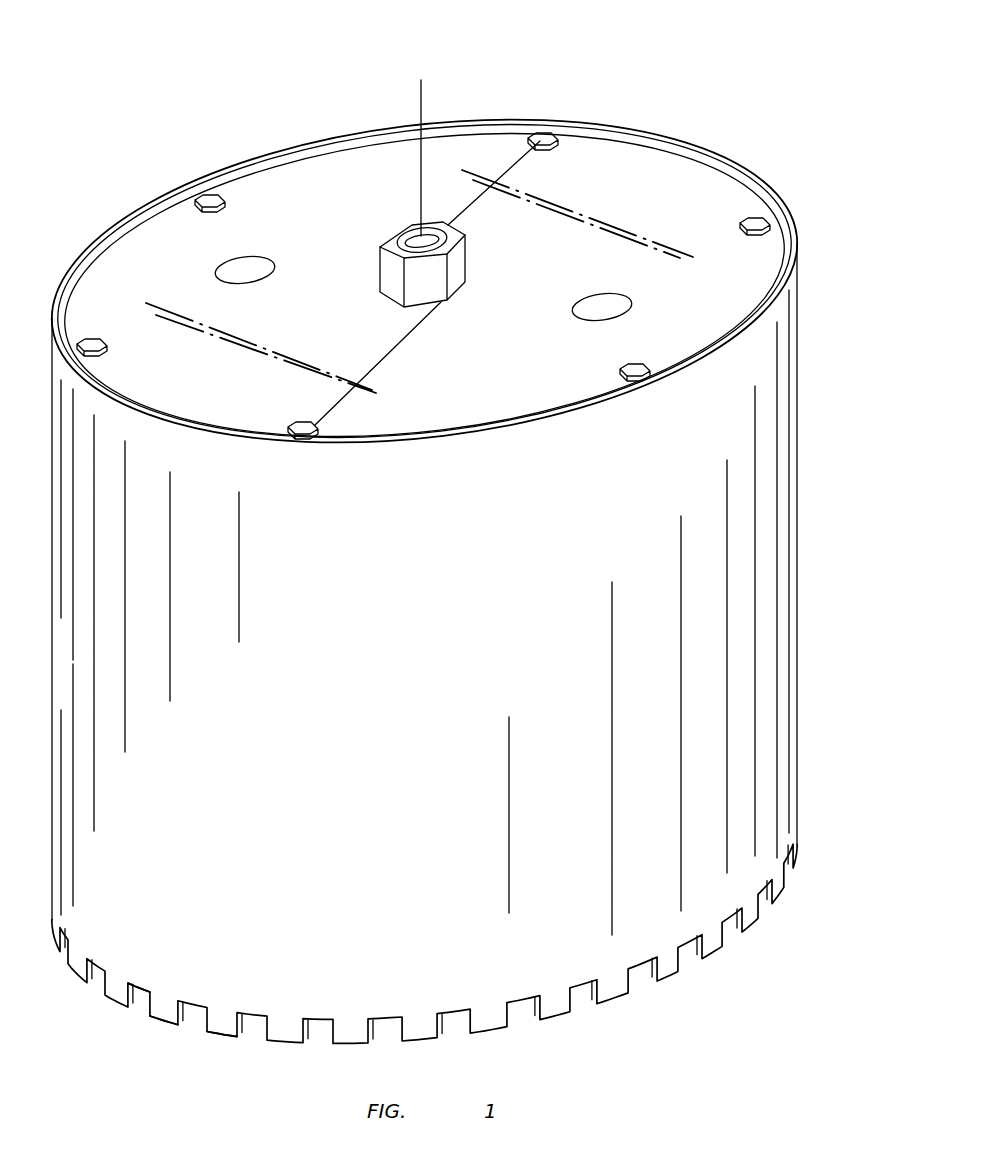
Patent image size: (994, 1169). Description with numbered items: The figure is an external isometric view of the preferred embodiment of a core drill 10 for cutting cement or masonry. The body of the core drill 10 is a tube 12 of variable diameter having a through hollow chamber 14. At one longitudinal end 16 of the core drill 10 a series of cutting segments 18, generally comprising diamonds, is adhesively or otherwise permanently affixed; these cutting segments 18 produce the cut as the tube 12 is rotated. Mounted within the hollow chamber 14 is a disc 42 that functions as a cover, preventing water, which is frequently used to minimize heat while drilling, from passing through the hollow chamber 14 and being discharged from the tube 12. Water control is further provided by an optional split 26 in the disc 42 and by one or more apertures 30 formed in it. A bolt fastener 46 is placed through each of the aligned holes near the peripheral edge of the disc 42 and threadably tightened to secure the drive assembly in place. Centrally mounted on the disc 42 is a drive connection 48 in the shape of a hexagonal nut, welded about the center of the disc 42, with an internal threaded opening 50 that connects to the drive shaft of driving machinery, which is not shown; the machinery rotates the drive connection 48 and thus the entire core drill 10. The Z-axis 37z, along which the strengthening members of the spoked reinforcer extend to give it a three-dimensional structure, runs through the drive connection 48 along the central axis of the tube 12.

The core drill 10 is at (158, 170).
The tube 12 is at (449, 724).
The hollow chamber 14 is at (636, 975).
The longitudinal end 16 is at (222, 1040).
The cutting segments 18 is at (160, 1013).
The split 26 is at (398, 330).
The apertures 30 is at (270, 258).
The Z-axis 37z is at (413, 146).
The disc 42 is at (515, 354).
The bolt fastener 46 is at (543, 132).
The drive connection 48 is at (459, 258).
The internal threaded opening 50 is at (405, 225).